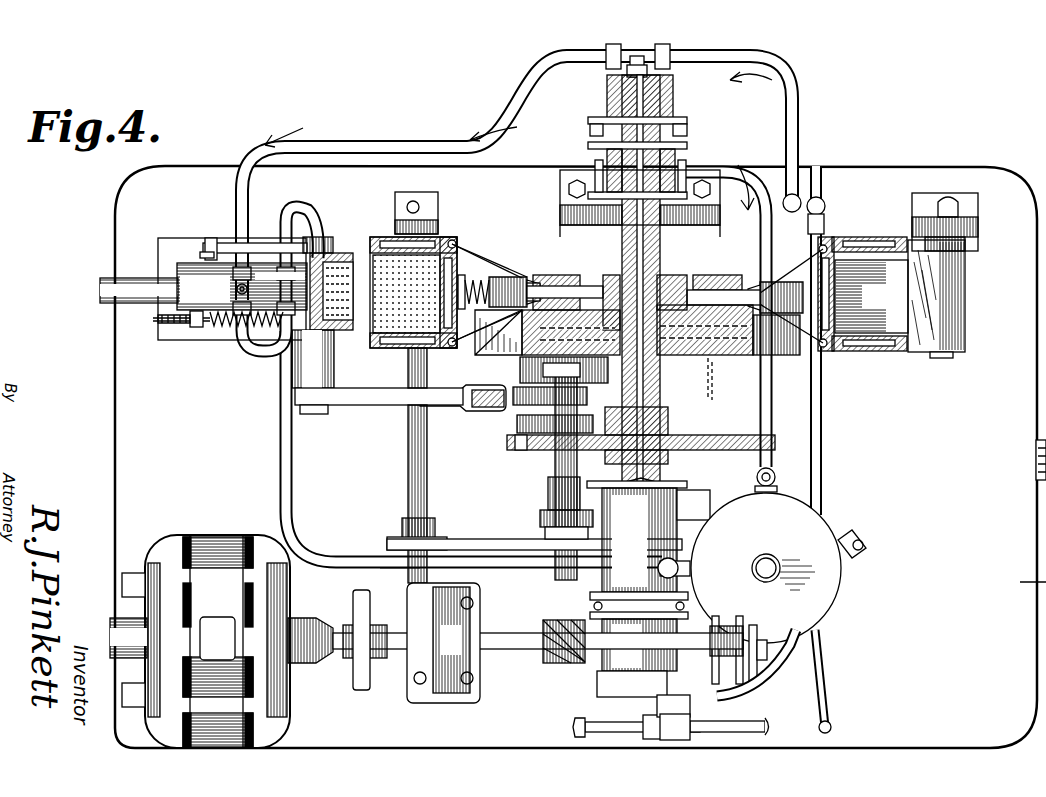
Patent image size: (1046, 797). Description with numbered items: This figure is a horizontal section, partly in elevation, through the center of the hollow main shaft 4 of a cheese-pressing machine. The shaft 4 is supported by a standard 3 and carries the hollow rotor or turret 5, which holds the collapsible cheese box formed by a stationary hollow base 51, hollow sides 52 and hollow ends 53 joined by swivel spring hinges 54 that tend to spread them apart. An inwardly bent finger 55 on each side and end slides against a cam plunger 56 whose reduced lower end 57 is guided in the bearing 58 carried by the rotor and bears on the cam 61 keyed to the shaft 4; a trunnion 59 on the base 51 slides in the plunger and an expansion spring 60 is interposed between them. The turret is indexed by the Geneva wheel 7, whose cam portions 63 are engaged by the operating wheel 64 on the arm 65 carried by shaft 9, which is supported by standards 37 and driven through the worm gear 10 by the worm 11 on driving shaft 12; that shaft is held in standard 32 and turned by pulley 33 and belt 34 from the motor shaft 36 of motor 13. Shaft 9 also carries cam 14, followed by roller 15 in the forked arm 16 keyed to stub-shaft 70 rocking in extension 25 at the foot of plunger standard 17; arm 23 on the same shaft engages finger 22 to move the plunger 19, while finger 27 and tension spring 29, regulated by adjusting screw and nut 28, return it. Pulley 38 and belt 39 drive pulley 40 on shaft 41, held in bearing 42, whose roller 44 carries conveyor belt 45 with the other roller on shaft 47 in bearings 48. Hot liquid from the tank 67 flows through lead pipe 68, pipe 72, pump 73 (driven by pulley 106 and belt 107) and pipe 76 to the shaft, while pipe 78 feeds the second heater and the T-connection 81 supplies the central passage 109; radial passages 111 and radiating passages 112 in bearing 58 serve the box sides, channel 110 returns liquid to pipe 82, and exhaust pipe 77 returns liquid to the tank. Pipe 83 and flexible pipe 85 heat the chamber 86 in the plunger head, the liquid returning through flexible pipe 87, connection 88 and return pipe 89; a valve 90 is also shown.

The standard 3 is at (688, 505).
The hollow main shaft 4 is at (666, 104).
The hollow rotor or revolving turret 5 is at (680, 356).
The Geneva wheel 7 is at (550, 457).
The shaft 9 is at (552, 481).
The worm gear 10 is at (190, 275).
The worm 11 is at (545, 625).
The driving shaft 12 is at (505, 650).
The motor 13 is at (204, 535).
The cam 14 is at (515, 402).
The roller 15 is at (470, 408).
The arm 16 is at (370, 405).
The plunger standard 17 is at (166, 340).
The plunger 19 is at (134, 304).
The finger 22 is at (210, 240).
The arm 23 is at (205, 252).
The extension 25 is at (305, 378).
The finger 27 is at (200, 332).
The adjusting screw and nut 28 is at (196, 328).
The tension spring 29 is at (230, 328).
The standard 32 is at (433, 680).
The pulley 33 is at (354, 598).
The belt 34 is at (355, 630).
The motor shaft 36 is at (334, 662).
The standards 37 is at (520, 371).
The pulley 38 is at (540, 522).
The belt 39 is at (455, 540).
The pulley 40 is at (400, 530).
The shaft 41 is at (406, 458).
The bearing 42 is at (395, 558).
The roller 44 is at (410, 365).
The conveyor belt 45 is at (920, 353).
The shaft 47 is at (955, 358).
The bearings 48 is at (978, 224).
The stationary hollow base 51 is at (468, 280).
The hollow sides 52 is at (446, 240).
The hollow ends 53 is at (373, 260).
The swivel spring hinges 54 is at (460, 240).
The extension or finger 55 is at (505, 278).
The cam plunger 56 is at (535, 283).
The reduced lower end 57 is at (592, 285).
The guide or bearing 58 is at (560, 276).
The trunnion 59 is at (478, 278).
The expansion spring 60 is at (488, 275).
The cam 61 is at (672, 275).
The cam portions 63 is at (512, 446).
The operating wheel 64 is at (518, 452).
The arm 65 is at (518, 425).
The hot water tank or reservoir 67 is at (843, 570).
The lead pipe 68 is at (826, 665).
The stub-shaft 70 is at (315, 414).
The pipe 72 is at (590, 720).
The pump 73 is at (645, 720).
The pipe 76 is at (773, 676).
The exhaust pipe 77 is at (698, 560).
The pipe 78 is at (824, 410).
The T-connection 81 is at (633, 56).
The pipe 82 is at (761, 407).
The pipe 83 is at (262, 178).
The flexible pipe 85 is at (262, 352).
The chamber 86 is at (337, 255).
The flexible pipe 87 is at (300, 205).
The connection 88 is at (266, 285).
The return pipe 89 is at (293, 480).
The valve 90 is at (236, 289).
The pulley 106 is at (768, 660).
The belt 107 is at (748, 655).
The central passage 109 is at (590, 122).
The channel 110 is at (590, 194).
The radial passages 111 is at (670, 412).
The radiating passages 112 is at (714, 385).